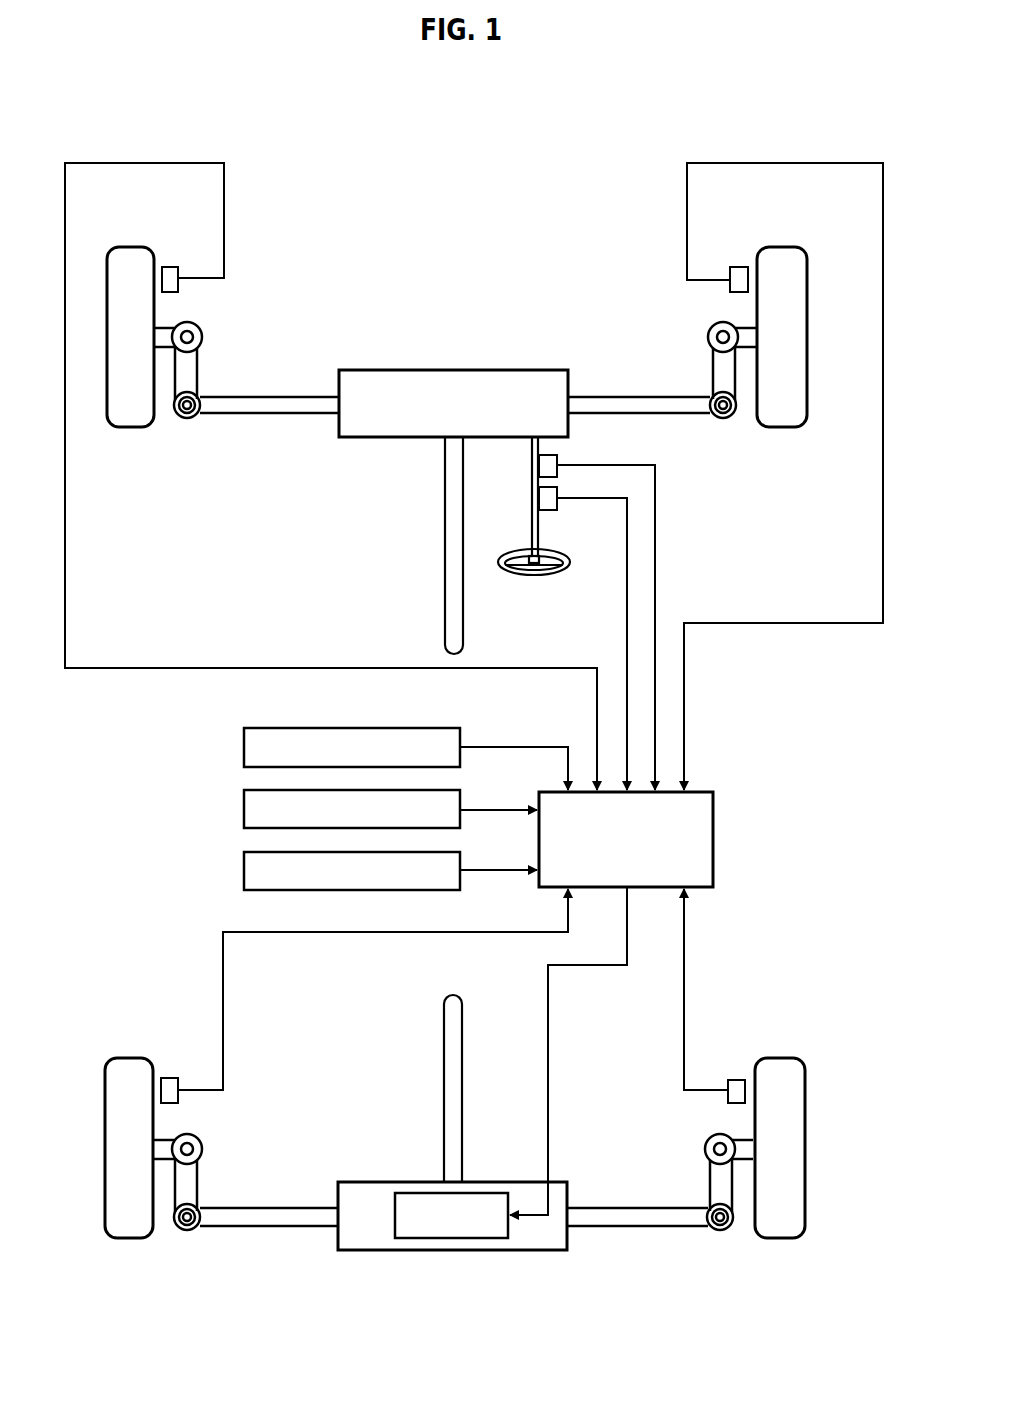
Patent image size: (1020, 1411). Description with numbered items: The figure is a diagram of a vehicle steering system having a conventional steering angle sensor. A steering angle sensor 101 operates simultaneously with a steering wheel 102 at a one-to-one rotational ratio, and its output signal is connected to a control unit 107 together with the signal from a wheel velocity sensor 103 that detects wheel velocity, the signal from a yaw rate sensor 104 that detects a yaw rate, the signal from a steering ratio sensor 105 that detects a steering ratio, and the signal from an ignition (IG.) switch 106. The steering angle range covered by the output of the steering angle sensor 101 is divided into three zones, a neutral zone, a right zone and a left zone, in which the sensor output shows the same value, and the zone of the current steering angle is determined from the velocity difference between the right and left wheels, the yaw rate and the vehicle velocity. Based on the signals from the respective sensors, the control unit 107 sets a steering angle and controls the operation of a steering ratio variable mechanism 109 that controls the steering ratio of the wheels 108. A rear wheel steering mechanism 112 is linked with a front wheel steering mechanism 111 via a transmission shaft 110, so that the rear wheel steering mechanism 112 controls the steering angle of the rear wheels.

The steering angle sensor 101 is at (548, 463).
The steering wheel 102 is at (533, 570).
The wheel velocity sensor 103 is at (170, 267).
The yaw rate sensor 104 is at (244, 810).
The steering ratio sensor 105 is at (244, 747).
The ignition (IG.) switch 106 is at (244, 870).
The control unit 107 is at (715, 848).
The wheels 108 is at (130, 410).
The steering ratio variable mechanism 109 is at (412, 1235).
The transmission shaft 110 is at (445, 575).
The front wheel steering mechanism 111 is at (447, 378).
The rear wheel steering mechanism 112 is at (535, 1252).